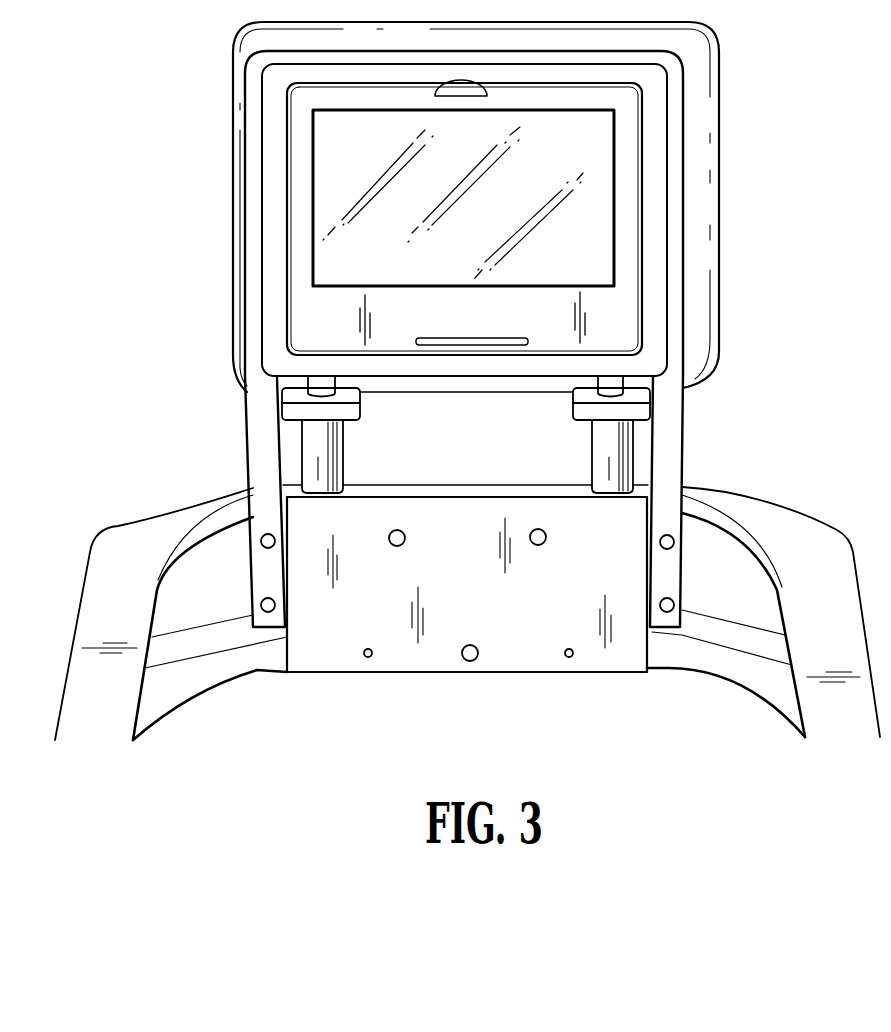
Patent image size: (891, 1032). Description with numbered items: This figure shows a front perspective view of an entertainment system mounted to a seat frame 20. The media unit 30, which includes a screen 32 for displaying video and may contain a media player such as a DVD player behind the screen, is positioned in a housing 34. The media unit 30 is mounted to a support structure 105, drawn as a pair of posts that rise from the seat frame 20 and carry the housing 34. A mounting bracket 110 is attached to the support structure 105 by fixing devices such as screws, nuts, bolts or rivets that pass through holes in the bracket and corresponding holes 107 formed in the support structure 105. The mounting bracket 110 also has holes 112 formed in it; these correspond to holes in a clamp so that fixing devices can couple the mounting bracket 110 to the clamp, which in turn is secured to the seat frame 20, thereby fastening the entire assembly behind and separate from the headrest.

The seat frame 20 is at (183, 507).
The media unit 30 is at (628, 232).
The screen 32 is at (358, 192).
The housing 34 is at (650, 148).
The support structure 105 is at (683, 417).
The holes 107 is at (261, 542).
The mounting bracket 110 is at (623, 575).
The holes 112 is at (548, 533).